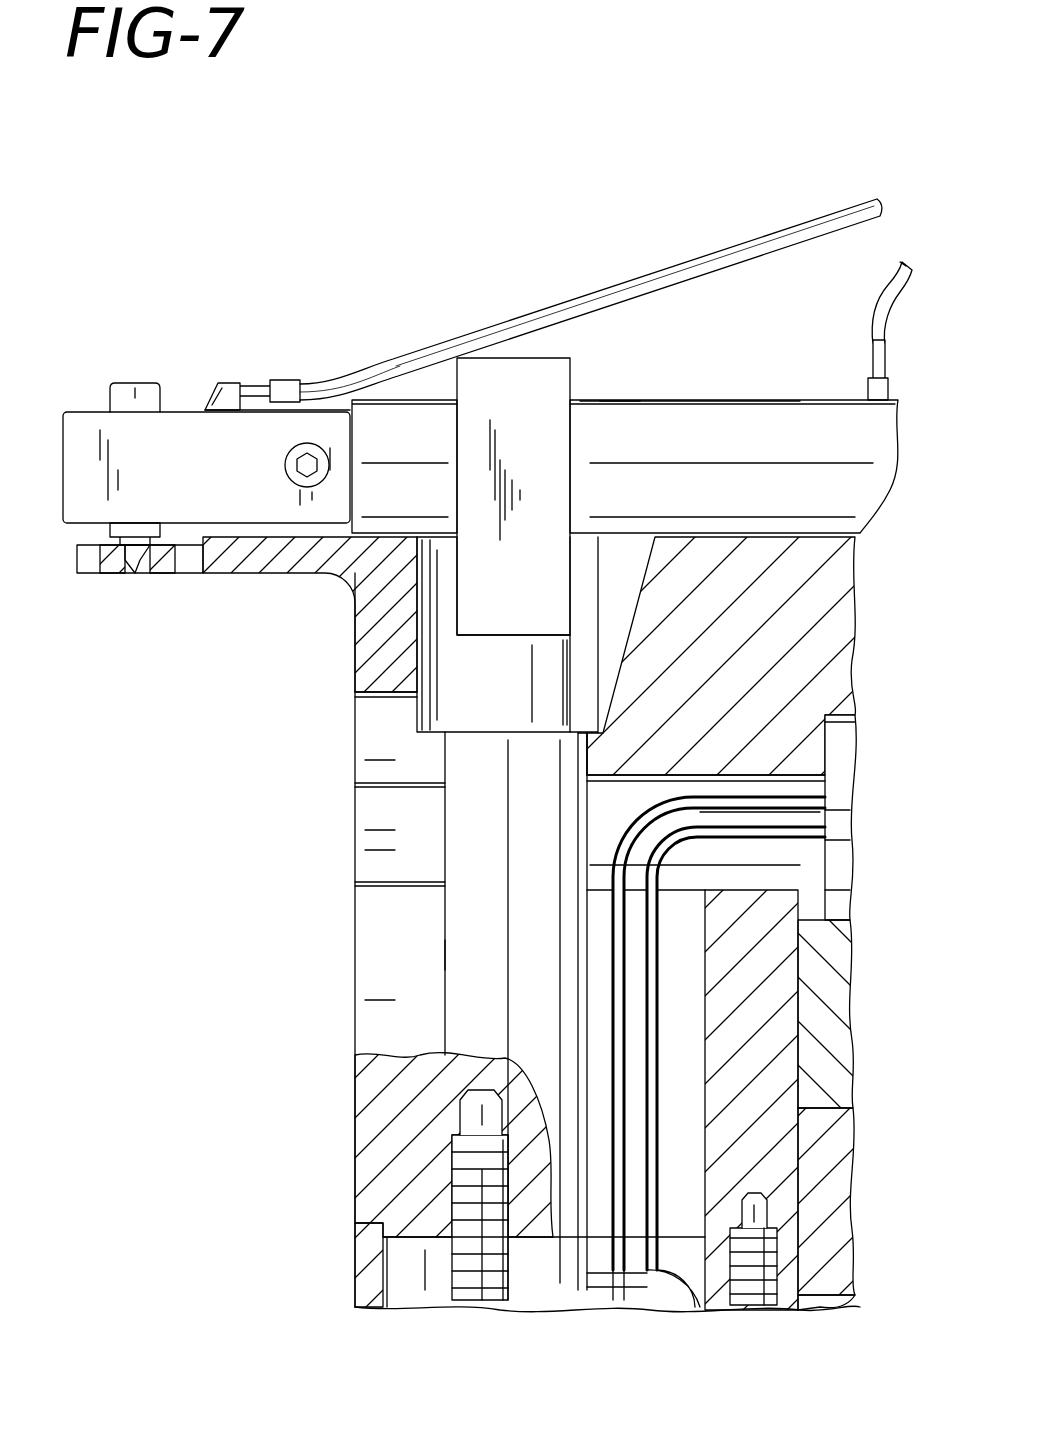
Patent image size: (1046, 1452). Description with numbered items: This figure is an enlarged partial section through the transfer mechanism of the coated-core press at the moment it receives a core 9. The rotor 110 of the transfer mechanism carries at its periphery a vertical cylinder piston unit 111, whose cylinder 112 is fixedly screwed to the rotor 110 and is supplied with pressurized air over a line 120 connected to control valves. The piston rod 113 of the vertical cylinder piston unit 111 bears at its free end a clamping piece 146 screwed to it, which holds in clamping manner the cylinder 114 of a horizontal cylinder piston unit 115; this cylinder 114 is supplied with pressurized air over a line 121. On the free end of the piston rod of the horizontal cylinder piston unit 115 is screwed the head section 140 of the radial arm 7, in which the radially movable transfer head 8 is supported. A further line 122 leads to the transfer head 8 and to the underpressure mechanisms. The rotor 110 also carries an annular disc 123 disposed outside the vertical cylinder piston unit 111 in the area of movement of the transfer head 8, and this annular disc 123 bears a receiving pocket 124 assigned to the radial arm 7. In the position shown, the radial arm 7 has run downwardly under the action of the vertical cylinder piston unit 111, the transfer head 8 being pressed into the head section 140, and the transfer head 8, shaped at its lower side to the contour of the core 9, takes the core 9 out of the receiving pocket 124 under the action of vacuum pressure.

The radial arm 7 is at (610, 392).
The transfer head 8 is at (120, 398).
The core 9 is at (120, 573).
The rotor 110 is at (368, 1088).
The vertical cylinder piston unit 111 is at (440, 953).
The cylinder 112 is at (465, 888).
The piston rod 113 is at (480, 700).
The cylinder 114 is at (788, 425).
The horizontal cylinder piston unit 115 is at (690, 395).
The line 120 is at (682, 1308).
The line 121 is at (892, 262).
The line 122 is at (765, 240).
The annular disc 123 is at (283, 562).
The receiving pocket 124 is at (157, 573).
The head section 140 is at (185, 420).
The clamping piece 146 is at (513, 380).